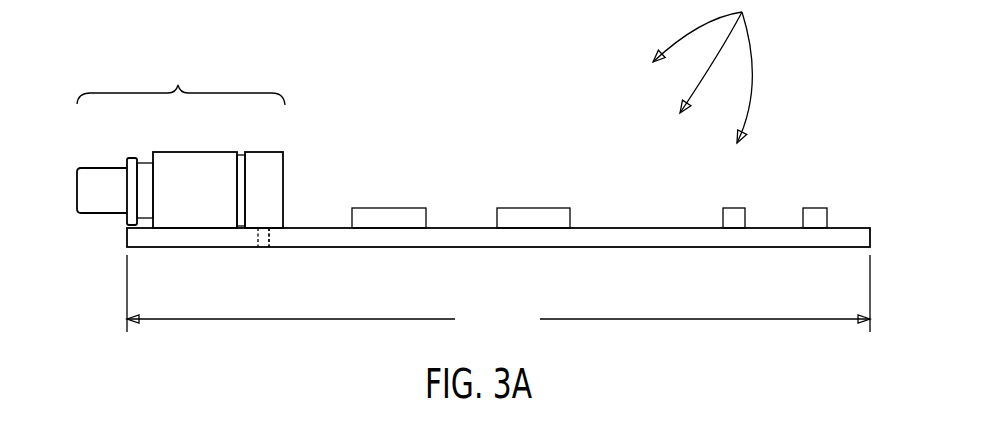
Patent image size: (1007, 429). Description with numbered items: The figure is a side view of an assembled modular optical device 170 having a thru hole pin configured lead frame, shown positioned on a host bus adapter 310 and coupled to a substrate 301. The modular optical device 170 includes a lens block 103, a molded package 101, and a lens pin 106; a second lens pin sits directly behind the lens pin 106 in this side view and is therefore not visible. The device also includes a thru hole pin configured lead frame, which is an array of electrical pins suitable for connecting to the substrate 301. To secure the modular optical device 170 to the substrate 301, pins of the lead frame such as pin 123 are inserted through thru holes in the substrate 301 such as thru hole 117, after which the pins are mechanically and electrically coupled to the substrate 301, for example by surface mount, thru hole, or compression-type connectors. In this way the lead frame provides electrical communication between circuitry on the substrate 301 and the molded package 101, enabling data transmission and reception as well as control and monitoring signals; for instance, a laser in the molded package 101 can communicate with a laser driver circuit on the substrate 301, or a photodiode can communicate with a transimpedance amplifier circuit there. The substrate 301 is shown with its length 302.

The molded package 101 is at (263, 151).
The lens block 103 is at (192, 151).
The lens pin 106 is at (105, 168).
The thru hole 117 is at (258, 247).
The pin 123 is at (269, 247).
The modular optical device 170 is at (178, 85).
The substrate 301 is at (450, 241).
The length 302 is at (498, 295).
The host bus adapter 310 is at (742, 12).